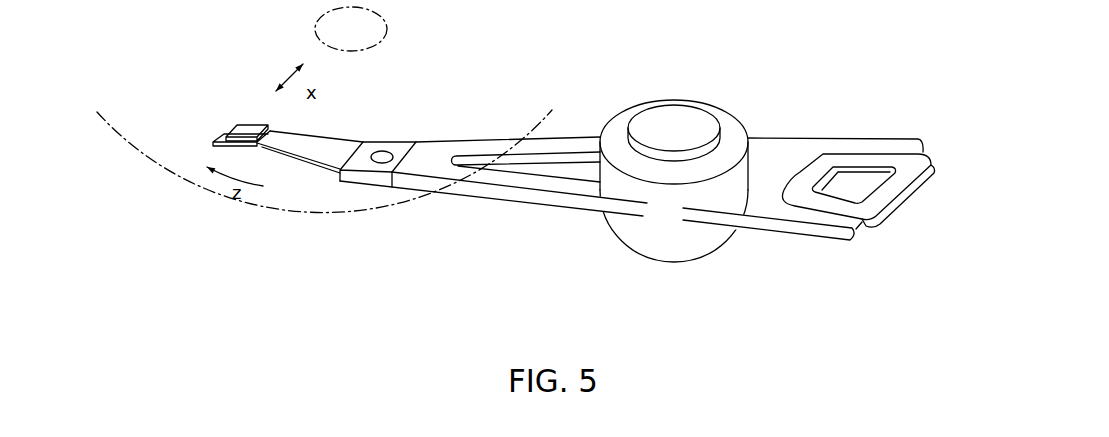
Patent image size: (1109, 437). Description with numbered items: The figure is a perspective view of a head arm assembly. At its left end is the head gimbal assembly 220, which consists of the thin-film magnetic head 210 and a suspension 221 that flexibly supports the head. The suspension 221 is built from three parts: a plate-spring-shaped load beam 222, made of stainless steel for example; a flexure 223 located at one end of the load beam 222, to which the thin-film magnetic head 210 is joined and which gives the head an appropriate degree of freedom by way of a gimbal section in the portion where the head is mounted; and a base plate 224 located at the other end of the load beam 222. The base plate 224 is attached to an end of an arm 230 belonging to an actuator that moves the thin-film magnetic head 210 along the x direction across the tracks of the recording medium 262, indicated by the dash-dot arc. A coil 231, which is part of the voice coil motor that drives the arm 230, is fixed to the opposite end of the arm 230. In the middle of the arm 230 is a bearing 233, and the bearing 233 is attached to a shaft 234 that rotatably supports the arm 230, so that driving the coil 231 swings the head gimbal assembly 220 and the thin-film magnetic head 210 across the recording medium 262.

The thin-film magnetic head 210 is at (247, 128).
The head gimbal assembly 220 is at (332, 184).
The suspension 221 is at (328, 134).
The load beam 222 is at (405, 141).
The flexure 223 is at (222, 136).
The base plate 224 is at (416, 141).
The arm 230 is at (483, 190).
The coil 231 is at (908, 207).
The bearing 233 is at (622, 115).
The shaft 234 is at (687, 120).
The recording medium 262 is at (257, 209).